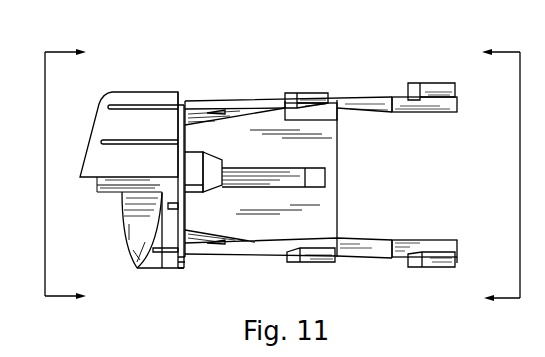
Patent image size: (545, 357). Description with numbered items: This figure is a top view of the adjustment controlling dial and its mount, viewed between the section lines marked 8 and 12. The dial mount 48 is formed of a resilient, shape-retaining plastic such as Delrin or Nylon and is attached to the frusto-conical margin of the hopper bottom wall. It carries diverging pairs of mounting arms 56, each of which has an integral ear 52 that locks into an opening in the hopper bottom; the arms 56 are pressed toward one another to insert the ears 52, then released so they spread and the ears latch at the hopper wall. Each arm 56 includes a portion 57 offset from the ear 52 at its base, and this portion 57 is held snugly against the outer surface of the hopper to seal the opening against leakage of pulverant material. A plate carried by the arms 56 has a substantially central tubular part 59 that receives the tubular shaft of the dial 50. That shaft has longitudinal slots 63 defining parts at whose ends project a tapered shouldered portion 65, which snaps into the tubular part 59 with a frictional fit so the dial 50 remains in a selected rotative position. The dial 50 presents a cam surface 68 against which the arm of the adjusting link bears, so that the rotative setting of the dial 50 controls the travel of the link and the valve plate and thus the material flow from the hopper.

The section line 8- 8 is at (74, 175).
The tubular frame part 12 is at (487, 176).
The dial mount 48 is at (249, 84).
The dial 50 is at (128, 96).
The ears 52 is at (430, 90).
The mounting arms 56 is at (367, 102).
The arm portion 57 is at (438, 107).
The tubular part 59 is at (190, 158).
The longitudinal slots 63 is at (229, 176).
The tapered shouldered portion 65 is at (217, 160).
The cam surface 68 is at (139, 259).